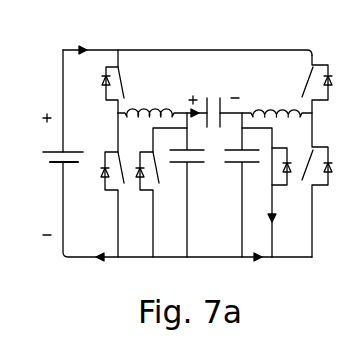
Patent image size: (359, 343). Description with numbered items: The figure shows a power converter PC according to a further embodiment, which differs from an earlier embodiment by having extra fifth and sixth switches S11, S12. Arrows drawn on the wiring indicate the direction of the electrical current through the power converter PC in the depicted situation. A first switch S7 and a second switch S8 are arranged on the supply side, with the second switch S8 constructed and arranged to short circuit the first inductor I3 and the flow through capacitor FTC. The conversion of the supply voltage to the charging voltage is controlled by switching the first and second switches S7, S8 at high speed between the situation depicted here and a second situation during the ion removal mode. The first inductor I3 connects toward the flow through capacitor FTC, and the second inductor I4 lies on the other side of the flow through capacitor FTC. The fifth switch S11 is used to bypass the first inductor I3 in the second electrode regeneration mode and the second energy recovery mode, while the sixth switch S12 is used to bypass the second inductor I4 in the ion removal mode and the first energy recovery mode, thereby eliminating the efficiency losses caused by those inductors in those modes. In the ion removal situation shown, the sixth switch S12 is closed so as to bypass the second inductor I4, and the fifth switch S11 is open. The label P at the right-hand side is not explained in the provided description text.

The power converter PC is at (80, 268).
The first switch S7 is at (120, 66).
The second switch S8 is at (105, 149).
The first inductor I3 is at (157, 66).
The flow through capacitor FTC is at (214, 95).
The second inductor I4 is at (265, 101).
The fifth switch S11 is at (156, 154).
The sixth switch S12 is at (270, 147).
The output switch pair P is at (330, 156).